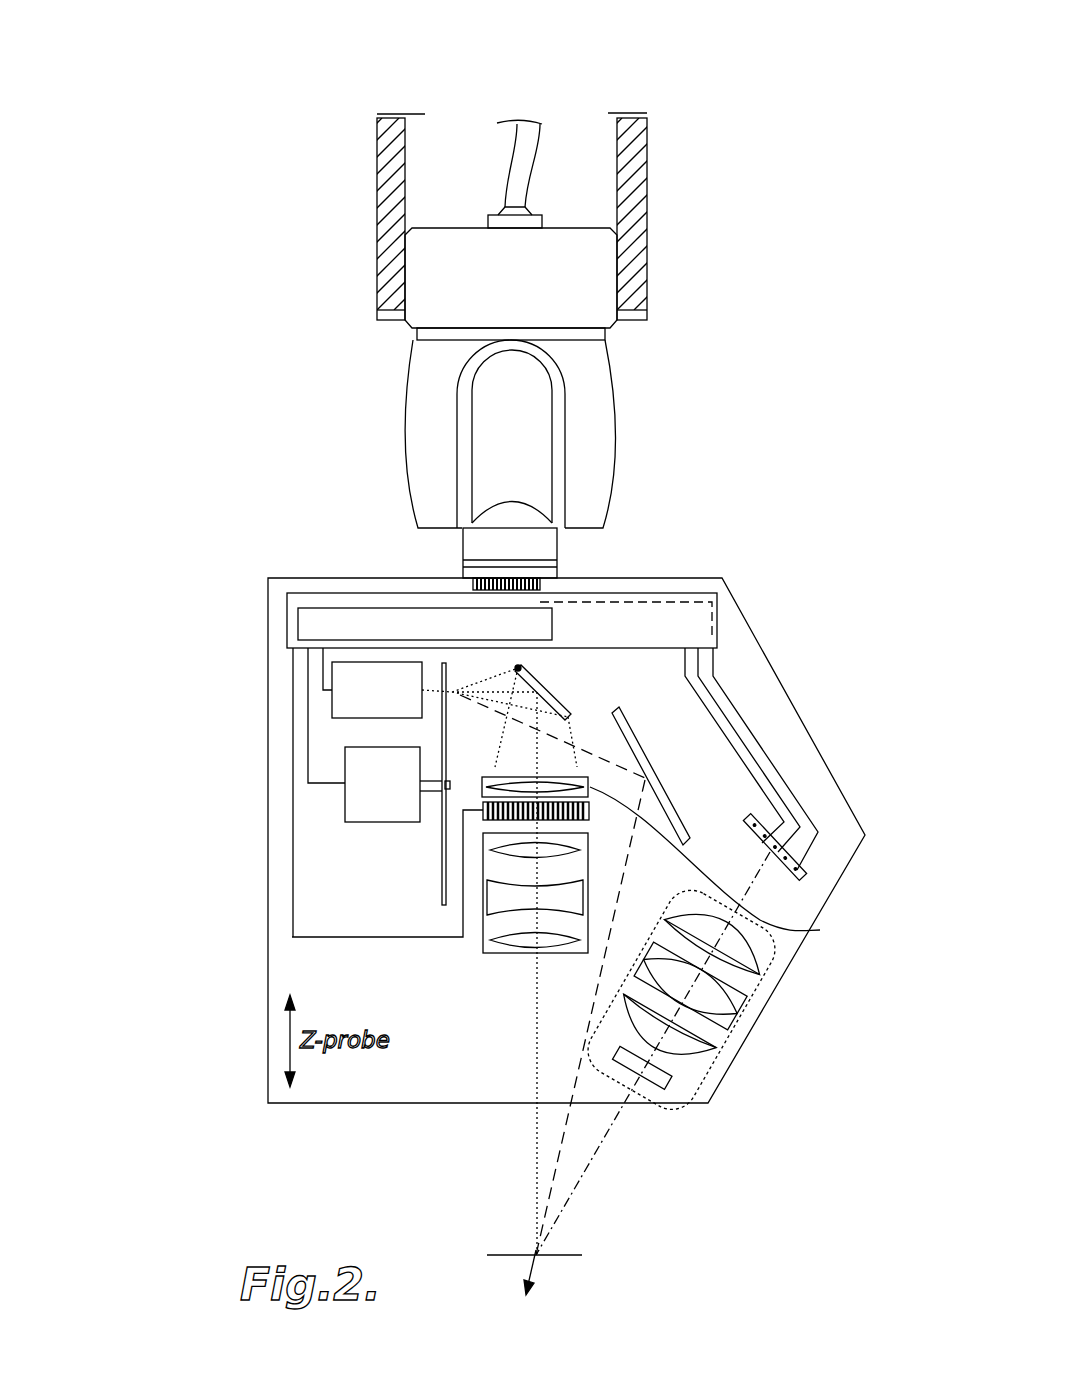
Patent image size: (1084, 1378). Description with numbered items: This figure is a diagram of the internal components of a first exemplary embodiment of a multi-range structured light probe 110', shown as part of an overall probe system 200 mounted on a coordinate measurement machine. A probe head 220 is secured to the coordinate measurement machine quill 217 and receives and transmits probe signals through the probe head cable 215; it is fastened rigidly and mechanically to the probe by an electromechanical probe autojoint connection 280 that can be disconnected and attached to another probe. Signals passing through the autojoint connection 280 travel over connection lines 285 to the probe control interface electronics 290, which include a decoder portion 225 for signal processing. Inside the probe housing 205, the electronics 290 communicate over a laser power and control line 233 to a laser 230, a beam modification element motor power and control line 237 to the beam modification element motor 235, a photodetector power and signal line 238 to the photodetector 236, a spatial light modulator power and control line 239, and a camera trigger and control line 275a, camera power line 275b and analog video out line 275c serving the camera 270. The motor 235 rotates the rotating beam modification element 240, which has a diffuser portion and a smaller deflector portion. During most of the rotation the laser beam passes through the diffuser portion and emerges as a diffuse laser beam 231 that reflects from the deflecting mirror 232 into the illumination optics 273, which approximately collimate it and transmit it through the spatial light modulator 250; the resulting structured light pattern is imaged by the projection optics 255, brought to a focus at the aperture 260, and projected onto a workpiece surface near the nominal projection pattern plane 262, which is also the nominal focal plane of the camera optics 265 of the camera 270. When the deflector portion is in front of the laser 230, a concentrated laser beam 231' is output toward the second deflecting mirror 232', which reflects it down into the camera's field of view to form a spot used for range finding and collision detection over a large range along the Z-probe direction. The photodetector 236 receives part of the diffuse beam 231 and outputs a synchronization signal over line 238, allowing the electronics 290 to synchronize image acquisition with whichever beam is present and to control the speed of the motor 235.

The probe system 200 is at (224, 100).
The multi-range structured light probe 110' is at (152, 523).
The probe housing 205 is at (292, 578).
The probe head cable 215 is at (538, 130).
The coordinate measurement machine quill 217 is at (647, 172).
The probe head 220 is at (405, 400).
The decoder portion 225 is at (298, 625).
The laser 230 is at (332, 690).
The diffuse laser beam 231 is at (552, 961).
The concentrated laser beam 231' is at (606, 965).
The deflecting mirror 232 is at (696, 759).
The deflecting mirror 232' is at (673, 776).
The laser power and control line 233 is at (293, 655).
The beam modification element motor 235 is at (345, 800).
The photodetector 236 is at (518, 668).
The beam modification element motor power and control line 237 is at (308, 730).
The photodetector power and signal line 238 is at (518, 668).
The spatial light modulator power and control line 239 is at (292, 913).
The rotating beam modification element 240 is at (442, 870).
The spatial light modulator 250 is at (482, 820).
The projection optics 255 is at (497, 953).
The aperture 260 is at (520, 883).
The nominal projection pattern plane 262 is at (583, 1255).
The camera optics 265 is at (770, 972).
The camera 270 is at (805, 865).
The illumination optics 273 is at (820, 930).
The camera trigger and control line 275a is at (713, 717).
The camera power line 275b is at (742, 737).
The analog video out line 275c is at (778, 767).
The probe autojoint connection 280 is at (557, 552).
The connection lines 285 is at (552, 585).
The probe control interface electronics 290 is at (722, 582).